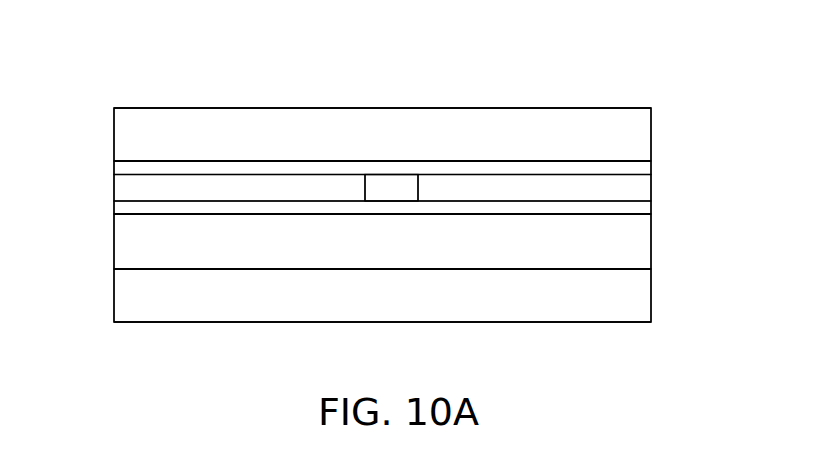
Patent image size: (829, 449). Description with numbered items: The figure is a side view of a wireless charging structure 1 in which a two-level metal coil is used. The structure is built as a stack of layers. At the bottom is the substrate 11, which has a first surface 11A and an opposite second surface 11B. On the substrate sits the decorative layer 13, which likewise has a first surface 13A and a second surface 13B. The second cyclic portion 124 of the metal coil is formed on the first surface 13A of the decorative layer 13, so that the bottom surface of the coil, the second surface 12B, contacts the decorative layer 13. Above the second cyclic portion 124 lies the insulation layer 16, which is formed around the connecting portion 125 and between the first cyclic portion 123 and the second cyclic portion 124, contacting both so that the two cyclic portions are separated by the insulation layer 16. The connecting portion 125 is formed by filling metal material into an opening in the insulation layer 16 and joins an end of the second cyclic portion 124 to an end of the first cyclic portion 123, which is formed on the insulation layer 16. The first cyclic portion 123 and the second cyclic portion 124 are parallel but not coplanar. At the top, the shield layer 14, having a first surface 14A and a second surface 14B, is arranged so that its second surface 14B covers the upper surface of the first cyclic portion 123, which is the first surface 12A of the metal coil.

The wireless charging structure 1 is at (686, 86).
The substrate 11 is at (593, 290).
The first surface 11A is at (641, 270).
The second surface 11B is at (641, 322).
The first surface 12A is at (641, 162).
The second surface 12B is at (641, 215).
The decorative layer 13 is at (180, 240).
The first surface 13A is at (118, 214).
The second surface 13B is at (118, 269).
The shield layer 14 is at (180, 135).
The first surface 14A is at (114, 108).
The second surface 14B is at (118, 161).
The insulation layer 16 is at (276, 186).
The first cyclic portion 123 is at (226, 166).
The second cyclic portion 124 is at (559, 210).
The connecting portion 125 is at (387, 186).